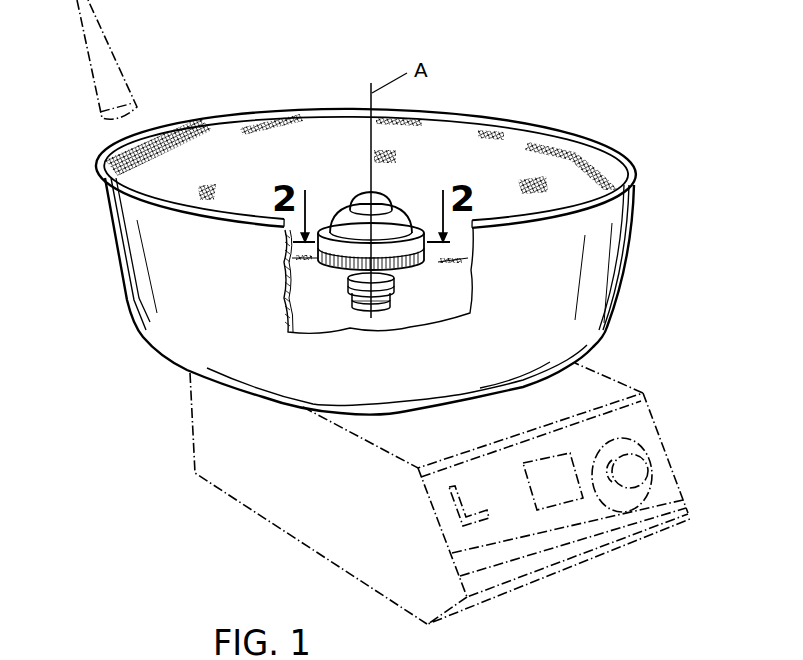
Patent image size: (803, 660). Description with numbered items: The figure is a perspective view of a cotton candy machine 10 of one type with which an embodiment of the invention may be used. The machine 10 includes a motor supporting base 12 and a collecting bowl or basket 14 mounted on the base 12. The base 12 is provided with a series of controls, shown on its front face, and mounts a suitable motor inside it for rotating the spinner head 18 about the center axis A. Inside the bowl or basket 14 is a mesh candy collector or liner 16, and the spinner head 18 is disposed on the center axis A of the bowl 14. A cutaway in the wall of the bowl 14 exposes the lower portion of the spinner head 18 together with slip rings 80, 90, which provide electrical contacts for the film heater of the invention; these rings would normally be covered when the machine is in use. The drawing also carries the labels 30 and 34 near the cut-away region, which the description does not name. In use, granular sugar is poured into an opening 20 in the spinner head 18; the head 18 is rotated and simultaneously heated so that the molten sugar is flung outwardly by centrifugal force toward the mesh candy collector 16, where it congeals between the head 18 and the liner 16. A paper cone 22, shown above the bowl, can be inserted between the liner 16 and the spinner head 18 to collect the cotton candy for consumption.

The cotton candy machine 10 is at (125, 459).
The motor supporting base 12 is at (290, 538).
The collecting bowl or basket 14 is at (613, 297).
The mesh candy collector or liner 16 is at (583, 158).
The spinner head 18 is at (409, 211).
The opening 20 is at (366, 197).
The paper cone 22 is at (125, 72).
The drive hub 30 is at (353, 227).
The bowl floor 34 is at (338, 269).
The slip ring 80 is at (395, 288).
The slip ring 90 is at (398, 298).